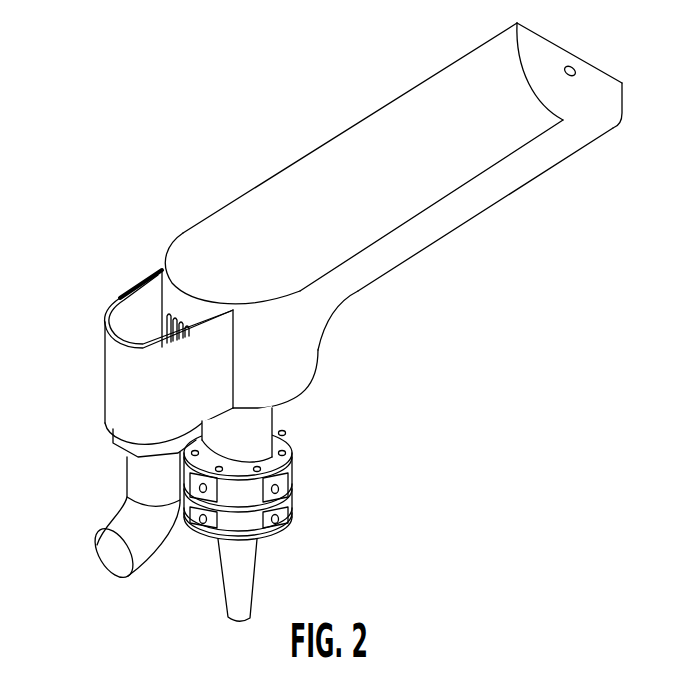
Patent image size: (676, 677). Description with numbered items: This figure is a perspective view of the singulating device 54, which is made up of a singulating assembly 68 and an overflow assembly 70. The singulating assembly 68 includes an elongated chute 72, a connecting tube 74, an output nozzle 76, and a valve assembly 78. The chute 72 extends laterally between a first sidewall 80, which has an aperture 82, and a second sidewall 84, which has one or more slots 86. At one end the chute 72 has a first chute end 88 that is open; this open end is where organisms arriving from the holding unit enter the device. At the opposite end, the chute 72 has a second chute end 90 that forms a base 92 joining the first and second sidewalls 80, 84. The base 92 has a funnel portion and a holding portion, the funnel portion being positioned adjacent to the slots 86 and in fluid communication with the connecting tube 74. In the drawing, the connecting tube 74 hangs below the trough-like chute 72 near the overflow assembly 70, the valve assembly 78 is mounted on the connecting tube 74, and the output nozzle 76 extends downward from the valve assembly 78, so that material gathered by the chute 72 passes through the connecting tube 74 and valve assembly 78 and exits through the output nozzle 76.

The singulating device 54 is at (71, 44).
The singulating assembly 68 is at (307, 118).
The overflow assembly 70 is at (61, 327).
The chute 72 is at (542, 180).
The connecting tube 74 is at (273, 427).
The output nozzle 76 is at (252, 563).
The valve assembly 78 is at (307, 494).
The first sidewall 80 is at (540, 45).
The aperture 82 is at (577, 70).
The second sidewall 84 is at (173, 300).
The slots 86 is at (167, 330).
The first chute end 88 is at (423, 78).
The second chute end 90 is at (303, 393).
The base 92 is at (368, 284).